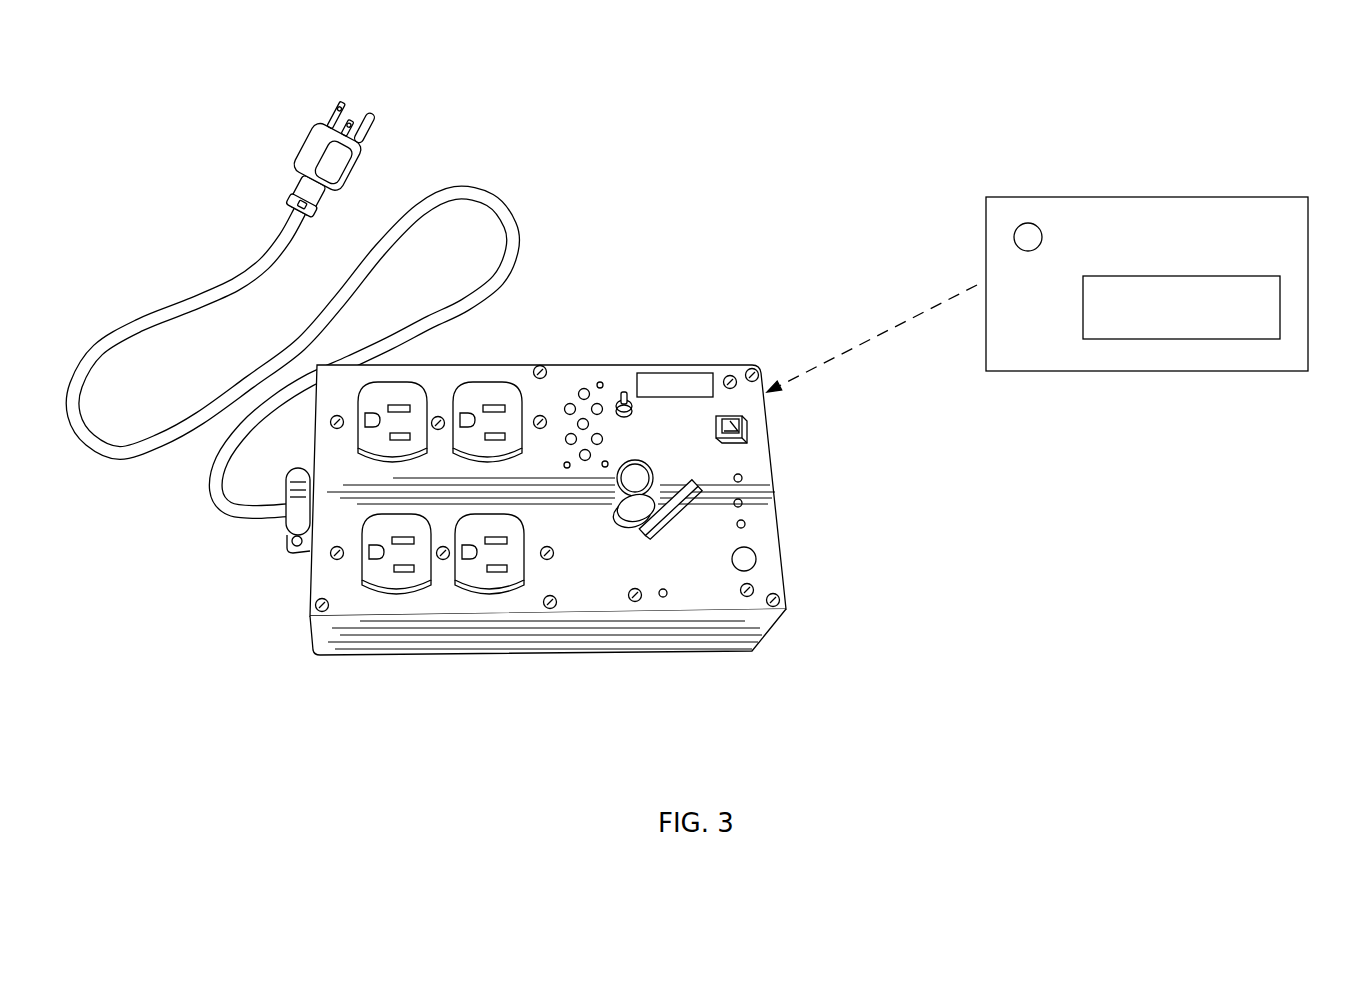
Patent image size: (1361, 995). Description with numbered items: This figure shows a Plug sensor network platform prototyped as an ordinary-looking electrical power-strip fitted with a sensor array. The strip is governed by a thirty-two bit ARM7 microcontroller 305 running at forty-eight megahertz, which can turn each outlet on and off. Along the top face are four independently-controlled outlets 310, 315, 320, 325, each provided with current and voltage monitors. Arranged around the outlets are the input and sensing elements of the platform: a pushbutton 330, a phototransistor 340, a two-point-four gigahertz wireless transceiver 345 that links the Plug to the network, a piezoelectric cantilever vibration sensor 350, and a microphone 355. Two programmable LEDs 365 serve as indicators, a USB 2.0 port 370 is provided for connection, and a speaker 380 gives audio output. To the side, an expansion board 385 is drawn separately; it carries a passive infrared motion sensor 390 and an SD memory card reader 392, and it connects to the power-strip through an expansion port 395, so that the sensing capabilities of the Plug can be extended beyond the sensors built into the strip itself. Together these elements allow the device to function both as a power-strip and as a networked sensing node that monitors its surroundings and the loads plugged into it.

The ARM7 microcontroller 305 is at (290, 593).
The outlet 310 is at (390, 583).
The outlet 315 is at (485, 580).
The outlet 320 is at (410, 397).
The outlet 325 is at (510, 397).
The pushbutton 330 is at (747, 525).
The phototransistor 340 is at (668, 595).
The wireless transceiver 345 is at (665, 530).
The piezoelectric cantilever vibration sensor 350 is at (797, 634).
The microphone 355 is at (752, 560).
The programmable LEDs 365 is at (748, 503).
The USB 2.0 port 370 is at (742, 424).
The speaker 380 is at (585, 388).
The expansion board 385 is at (1262, 197).
The passive infrared (PIR) motion sensor 390 is at (1014, 238).
The SD memory card reader 392 is at (1163, 339).
The expansion port 395 is at (706, 383).